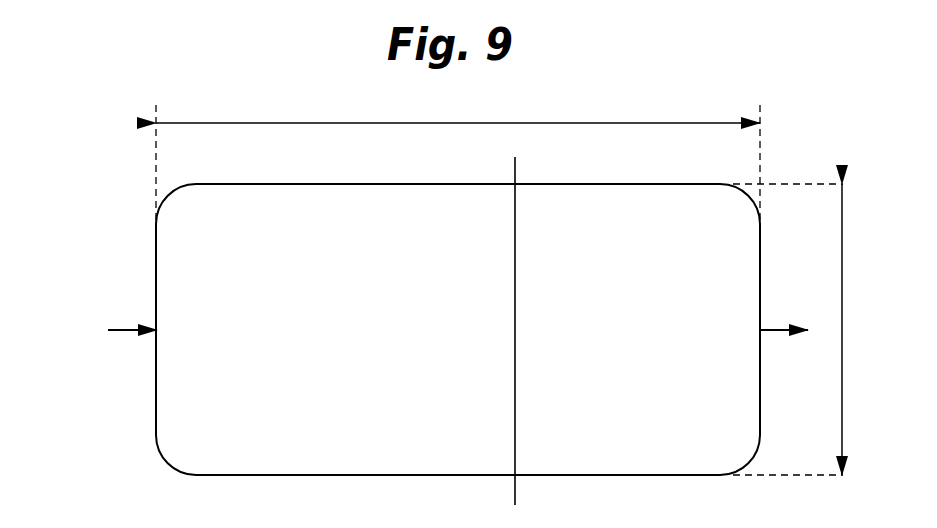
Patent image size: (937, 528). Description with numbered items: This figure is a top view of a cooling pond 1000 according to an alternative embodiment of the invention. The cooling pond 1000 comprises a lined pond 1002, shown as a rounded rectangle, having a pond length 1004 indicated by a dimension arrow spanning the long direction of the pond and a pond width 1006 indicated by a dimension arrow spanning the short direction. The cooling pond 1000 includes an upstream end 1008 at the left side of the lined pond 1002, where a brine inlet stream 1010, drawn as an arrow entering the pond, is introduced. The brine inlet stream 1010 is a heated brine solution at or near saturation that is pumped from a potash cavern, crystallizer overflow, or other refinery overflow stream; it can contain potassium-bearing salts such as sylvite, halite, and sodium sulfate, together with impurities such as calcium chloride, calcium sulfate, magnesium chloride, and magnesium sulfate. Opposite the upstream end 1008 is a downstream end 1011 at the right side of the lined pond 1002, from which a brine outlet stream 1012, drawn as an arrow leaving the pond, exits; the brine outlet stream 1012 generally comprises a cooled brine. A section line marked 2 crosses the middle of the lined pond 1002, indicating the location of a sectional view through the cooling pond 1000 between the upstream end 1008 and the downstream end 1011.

The cooling pond 1000 is at (119, 228).
The lined pond 1002 is at (650, 477).
The pond length 1004 is at (396, 122).
The pond width 1006 is at (842, 372).
The upstream end 1008 is at (156, 390).
The brine inlet stream 1010 is at (122, 326).
The downstream end 1011 is at (761, 403).
The brine outlet stream 1012 is at (775, 328).
The section line 2- 2 is at (570, 167).